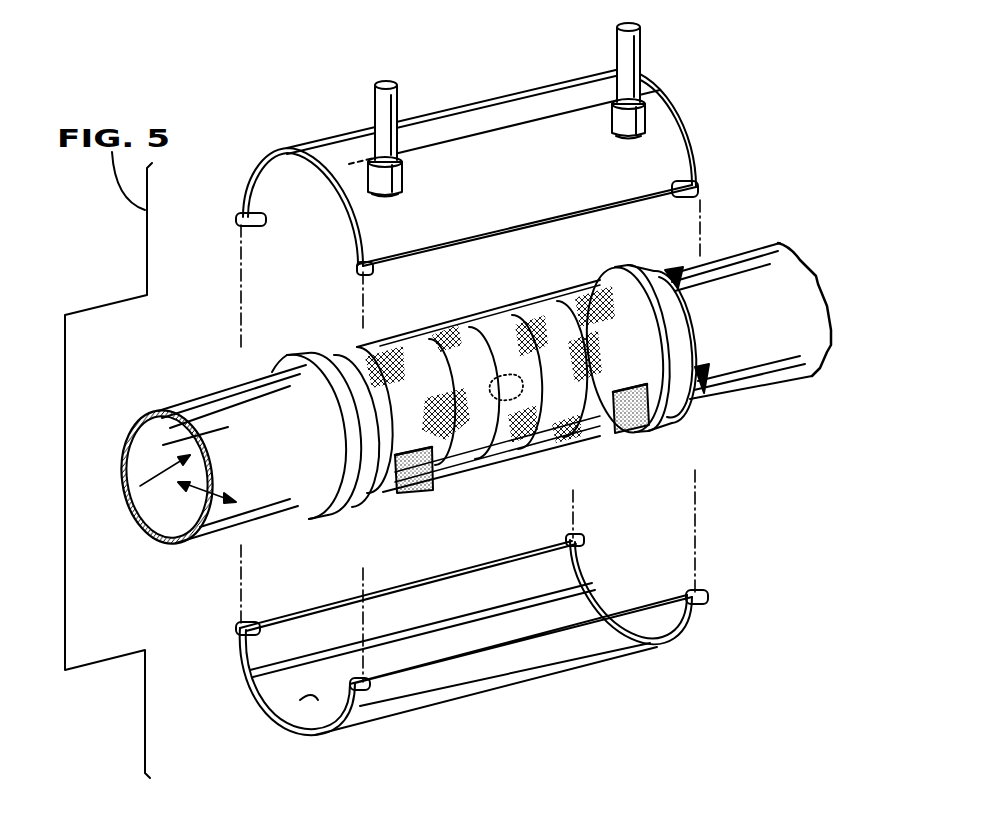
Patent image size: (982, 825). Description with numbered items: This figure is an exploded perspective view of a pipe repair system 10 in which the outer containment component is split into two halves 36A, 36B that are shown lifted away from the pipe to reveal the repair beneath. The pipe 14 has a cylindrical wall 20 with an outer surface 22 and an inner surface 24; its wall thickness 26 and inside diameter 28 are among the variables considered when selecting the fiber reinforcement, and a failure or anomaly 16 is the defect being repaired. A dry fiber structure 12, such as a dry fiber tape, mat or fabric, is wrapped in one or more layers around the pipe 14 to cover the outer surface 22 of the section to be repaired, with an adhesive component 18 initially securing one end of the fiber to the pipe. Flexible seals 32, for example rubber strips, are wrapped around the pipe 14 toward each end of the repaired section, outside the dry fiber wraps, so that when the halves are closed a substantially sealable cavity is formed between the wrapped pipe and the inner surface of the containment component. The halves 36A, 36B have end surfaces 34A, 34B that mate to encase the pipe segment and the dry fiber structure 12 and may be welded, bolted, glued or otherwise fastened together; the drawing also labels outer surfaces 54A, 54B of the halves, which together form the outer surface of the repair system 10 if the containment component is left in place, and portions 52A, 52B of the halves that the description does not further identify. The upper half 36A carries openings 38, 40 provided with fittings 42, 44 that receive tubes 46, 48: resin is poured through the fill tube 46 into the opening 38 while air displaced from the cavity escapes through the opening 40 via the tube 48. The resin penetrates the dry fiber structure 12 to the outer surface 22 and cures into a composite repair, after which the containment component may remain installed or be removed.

The pipe repair system 10 is at (470, 422).
The dry fiber structure 12 is at (457, 343).
The pipe 14 is at (608, 350).
The failure or anomaly 16 is at (518, 405).
The adhesive component 18 is at (408, 488).
The cylindrical wall 20 is at (163, 410).
The outer surface 22 is at (282, 480).
The inner surface 24 is at (160, 545).
The wall thickness 26 is at (210, 475).
The inside diameter 28 is at (140, 517).
The seals 32 is at (318, 352).
The end surface 34A is at (243, 220).
The end surface 34B is at (262, 614).
The containment component half 36A is at (476, 139).
The containment component half 36B is at (443, 652).
The opening 38 is at (390, 193).
The opening 40 is at (632, 135).
The fitting 42 is at (402, 178).
The fitting 44 is at (612, 102).
The fill tube 46 is at (396, 138).
The tube 48 is at (616, 89).
The upper shell slot 52A is at (297, 173).
The lower shell slot 52B is at (307, 700).
The upper shell flange 54A is at (473, 100).
The lower shell flange 54B is at (610, 650).